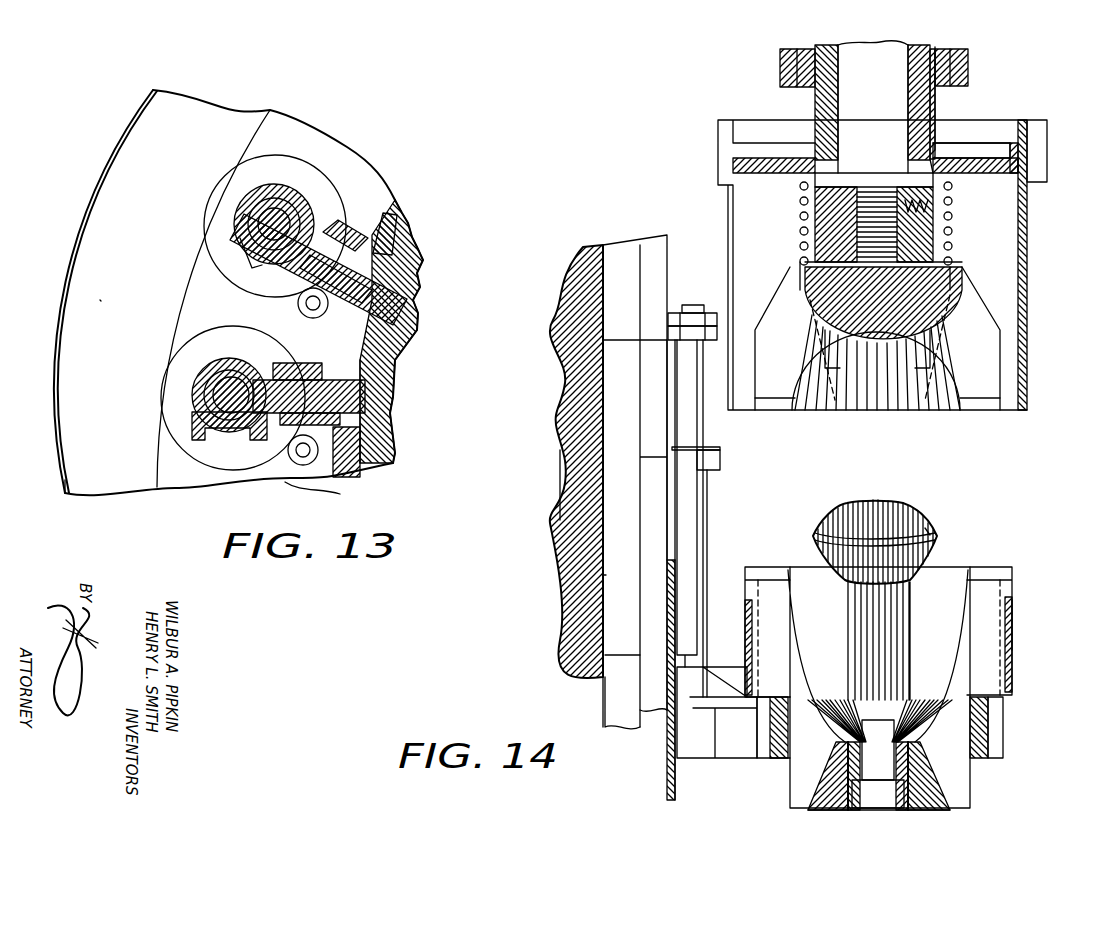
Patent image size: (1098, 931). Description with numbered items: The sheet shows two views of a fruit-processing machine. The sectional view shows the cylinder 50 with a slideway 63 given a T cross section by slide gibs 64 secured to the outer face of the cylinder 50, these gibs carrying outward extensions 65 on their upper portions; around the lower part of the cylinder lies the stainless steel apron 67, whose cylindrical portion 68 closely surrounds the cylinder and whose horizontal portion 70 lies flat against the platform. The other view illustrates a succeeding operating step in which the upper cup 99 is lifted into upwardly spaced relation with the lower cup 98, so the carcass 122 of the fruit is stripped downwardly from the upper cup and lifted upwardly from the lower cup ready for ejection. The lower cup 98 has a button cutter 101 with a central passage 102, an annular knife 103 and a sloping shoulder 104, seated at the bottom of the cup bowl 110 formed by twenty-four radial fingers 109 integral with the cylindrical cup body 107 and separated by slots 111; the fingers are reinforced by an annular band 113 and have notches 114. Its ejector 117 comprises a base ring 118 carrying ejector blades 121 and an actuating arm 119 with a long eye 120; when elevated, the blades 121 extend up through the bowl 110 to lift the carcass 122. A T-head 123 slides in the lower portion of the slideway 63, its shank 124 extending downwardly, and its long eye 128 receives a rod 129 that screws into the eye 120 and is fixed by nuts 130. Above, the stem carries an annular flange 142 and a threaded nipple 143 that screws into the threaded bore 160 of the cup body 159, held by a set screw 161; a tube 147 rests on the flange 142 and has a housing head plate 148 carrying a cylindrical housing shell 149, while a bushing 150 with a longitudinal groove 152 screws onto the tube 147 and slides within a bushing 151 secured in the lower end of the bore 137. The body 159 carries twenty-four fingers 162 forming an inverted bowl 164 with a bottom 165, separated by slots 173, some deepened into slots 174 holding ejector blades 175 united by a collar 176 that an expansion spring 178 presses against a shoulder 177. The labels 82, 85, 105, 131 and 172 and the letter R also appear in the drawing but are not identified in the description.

In FIG. 13, the cylinder 50 is at (408, 410).
In FIG. 14, the cylinder 50 is at (556, 498).
In FIG. 13, the slideways 63 is at (372, 303).
In FIG. 14, the slideways 63 is at (600, 577).
In FIG. 13, the slide gibs 64 is at (402, 258).
In FIG. 14, the slide gibs 64 is at (660, 281).
In FIG. 13, the outward extensions 65 is at (358, 256).
In FIG. 13, the stainless steel apron 67 is at (183, 344).
In FIG. 14, the stainless steel apron 67 is at (655, 801).
In FIG. 13, the cylindrical portion 68 is at (388, 222).
In FIG. 14, the cylindrical portion 68 is at (667, 760).
In FIG. 13, the horizontal portion 70 is at (194, 284).
In FIG. 13, the drum rim 82 is at (85, 480).
In FIG. 13, the flange 85 is at (288, 373).
In FIG. 14, the lower cup 98 is at (1035, 631).
In FIG. 14, the upper cup 99 is at (1010, 292).
In FIG. 14, the button cutter 101 is at (902, 782).
In FIG. 14, the central passage 102 is at (883, 777).
In FIG. 14, the annular knife 103 is at (850, 731).
In FIG. 14, the sloping shoulder 104 is at (918, 745).
In FIG. 14, the base plate 105 is at (910, 810).
In FIG. 14, the cylindrical cup body 107 is at (945, 807).
In FIG. 14, the fingers 109 is at (770, 580).
In FIG. 14, the cup bowl 110 is at (962, 662).
In FIG. 14, the slots 111 is at (825, 774).
In FIG. 14, the annular band 113 is at (1013, 668).
In FIG. 14, the notches 114 is at (1035, 708).
In FIG. 14, the ejector 117 is at (1003, 737).
In FIG. 14, the base ring 118 is at (782, 735).
In FIG. 14, the actuating arm 119 is at (745, 684).
In FIG. 14, the long eye 120 is at (712, 755).
In FIG. 14, the ejector blades 121 is at (830, 617).
In FIG. 14, the carcass 122 is at (908, 515).
In FIG. 14, the T-head 123 is at (592, 429).
In FIG. 14, the shank 124 is at (598, 516).
In FIG. 14, the long eye 128 is at (697, 428).
In FIG. 13, the rod 129 is at (300, 311).
In FIG. 14, the rod 129 is at (707, 503).
In FIG. 14, the nuts 130 is at (698, 320).
In FIG. 13, the hub bearing 131 is at (230, 211).
In FIG. 14, the hub bearing 131 is at (985, 82).
In FIG. 13, the bore 137 is at (258, 226).
In FIG. 14, the bore 137 is at (940, 100).
In FIG. 14, the annular flange 142 is at (918, 190).
In FIG. 14, the threaded nipple 143 is at (835, 288).
In FIG. 14, the tube 147 is at (840, 165).
In FIG. 14, the housing head plate 148 is at (750, 178).
In FIG. 14, the cylindrical housing shell 149 is at (1027, 200).
In FIG. 14, the bushing 150 is at (938, 114).
In FIG. 14, the bushing 151 is at (778, 75).
In FIG. 14, the longitudinal groove 152 is at (946, 122).
In FIG. 14, the cup body 159 is at (893, 84).
In FIG. 14, the threaded bore 160 is at (945, 290).
In FIG. 14, the set screw 161 is at (935, 199).
In FIG. 14, the fingers 162 is at (790, 410).
In FIG. 14, the inverted bowl 164 is at (950, 372).
In FIG. 14, the bottom 165 is at (868, 355).
In FIG. 14, the side plate 172 is at (812, 292).
In FIG. 14, the slots 173 is at (950, 322).
In FIG. 14, the slots 174 is at (886, 350).
In FIG. 14, the ejector blades 175 is at (830, 372).
In FIG. 14, the collar 176 is at (805, 258).
In FIG. 14, the shoulder 177 is at (805, 275).
In FIG. 14, the expansion spring 178 is at (798, 208).
In FIG. 14, the radius R is at (935, 536).